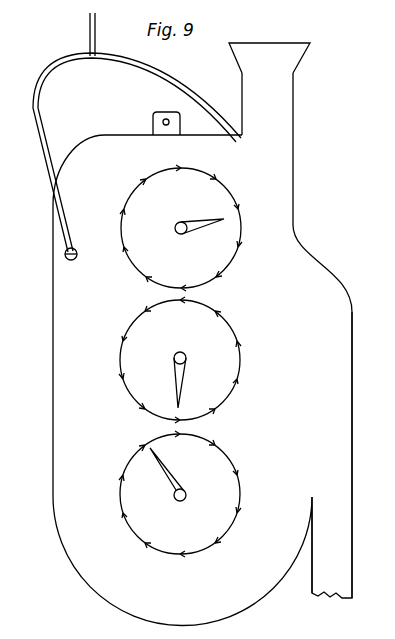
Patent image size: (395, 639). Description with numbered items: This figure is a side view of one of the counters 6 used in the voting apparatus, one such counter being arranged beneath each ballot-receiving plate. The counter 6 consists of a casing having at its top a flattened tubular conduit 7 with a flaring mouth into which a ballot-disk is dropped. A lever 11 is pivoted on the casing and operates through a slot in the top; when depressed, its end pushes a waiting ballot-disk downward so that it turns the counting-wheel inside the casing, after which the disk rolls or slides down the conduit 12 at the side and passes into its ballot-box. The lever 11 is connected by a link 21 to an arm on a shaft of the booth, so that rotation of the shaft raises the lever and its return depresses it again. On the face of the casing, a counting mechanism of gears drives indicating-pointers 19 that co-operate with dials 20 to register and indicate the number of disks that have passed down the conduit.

The counter 6 is at (202, 349).
The flattened tubular conduit 7 is at (269, 76).
The lever 11 is at (137, 156).
The conduit 12 is at (332, 455).
The indicating-pointer 19 is at (187, 360).
The dial 20 is at (233, 246).
The link 21 is at (101, 34).